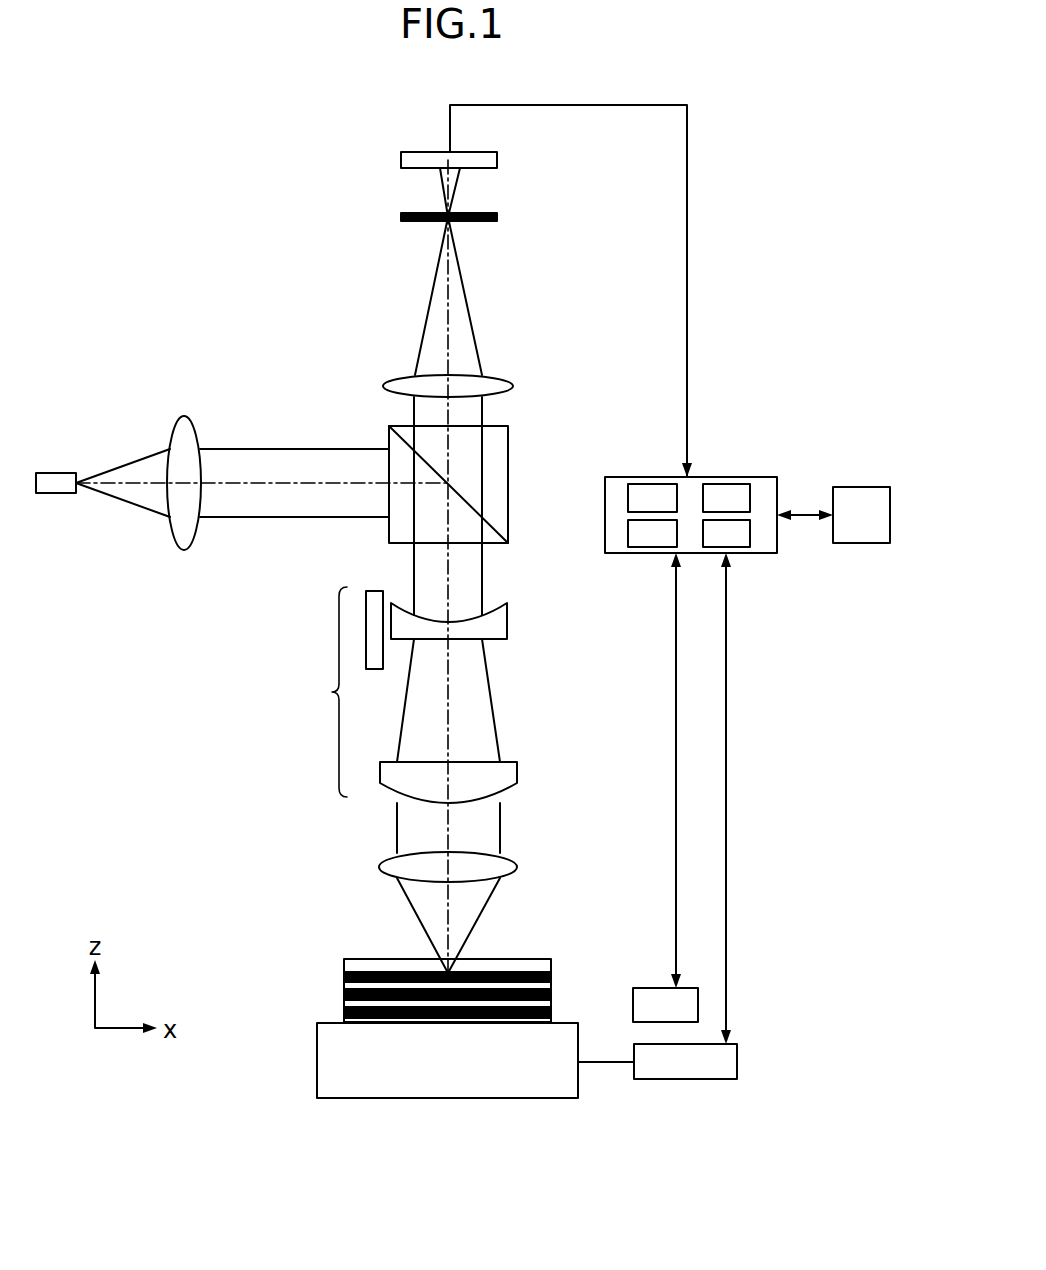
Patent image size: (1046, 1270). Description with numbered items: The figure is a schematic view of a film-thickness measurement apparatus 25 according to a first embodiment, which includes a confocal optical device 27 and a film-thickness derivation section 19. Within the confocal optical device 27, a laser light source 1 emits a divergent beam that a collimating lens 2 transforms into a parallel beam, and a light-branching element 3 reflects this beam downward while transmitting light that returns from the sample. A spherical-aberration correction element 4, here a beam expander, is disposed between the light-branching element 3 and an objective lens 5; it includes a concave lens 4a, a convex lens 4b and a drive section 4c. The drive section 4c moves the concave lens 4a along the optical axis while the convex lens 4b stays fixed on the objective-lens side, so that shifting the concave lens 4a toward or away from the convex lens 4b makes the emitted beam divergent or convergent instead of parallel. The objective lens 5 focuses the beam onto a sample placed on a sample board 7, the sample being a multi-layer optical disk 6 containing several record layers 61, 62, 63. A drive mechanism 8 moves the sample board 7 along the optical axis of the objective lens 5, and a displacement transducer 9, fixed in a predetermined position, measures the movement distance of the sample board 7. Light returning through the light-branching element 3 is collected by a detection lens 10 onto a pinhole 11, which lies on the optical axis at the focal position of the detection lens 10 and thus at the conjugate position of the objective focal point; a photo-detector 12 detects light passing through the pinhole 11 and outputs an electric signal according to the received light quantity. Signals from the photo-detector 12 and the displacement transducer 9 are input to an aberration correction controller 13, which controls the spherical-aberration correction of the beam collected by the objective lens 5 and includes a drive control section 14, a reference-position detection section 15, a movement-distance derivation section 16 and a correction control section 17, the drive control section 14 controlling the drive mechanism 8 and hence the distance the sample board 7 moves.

The laser light source 1 is at (57, 495).
The collimating lens 2 is at (184, 550).
The light-branching element 3 is at (400, 437).
The spherical-aberration correction element 4 is at (446, 720).
The concave lens 4a is at (507, 639).
The convex lens 4b is at (517, 775).
The drive section 4c is at (373, 669).
The objective lens 5 is at (387, 868).
The multi-layer optical disk 6 is at (352, 967).
The record layer 61 is at (345, 977).
The record layer 62 is at (345, 997).
The record layer 63 is at (345, 1010).
The sample board 7 is at (325, 1068).
The drive mechanism 8 is at (713, 1080).
The displacement transducer 9 is at (650, 987).
The detection lens 10 is at (497, 383).
The pinhole 11 is at (498, 217).
The photo-detector 12 is at (490, 162).
The aberration correction controller 13 is at (742, 475).
The drive control section 14 is at (648, 483).
The reference-position detection section 15 is at (640, 547).
The movement-distance derivation section 16 is at (750, 496).
The correction control section 17 is at (740, 547).
The film-thickness derivation section 19 is at (860, 543).
The film-thickness measurement apparatus 25 is at (765, 107).
The confocal optical device 27 is at (310, 303).